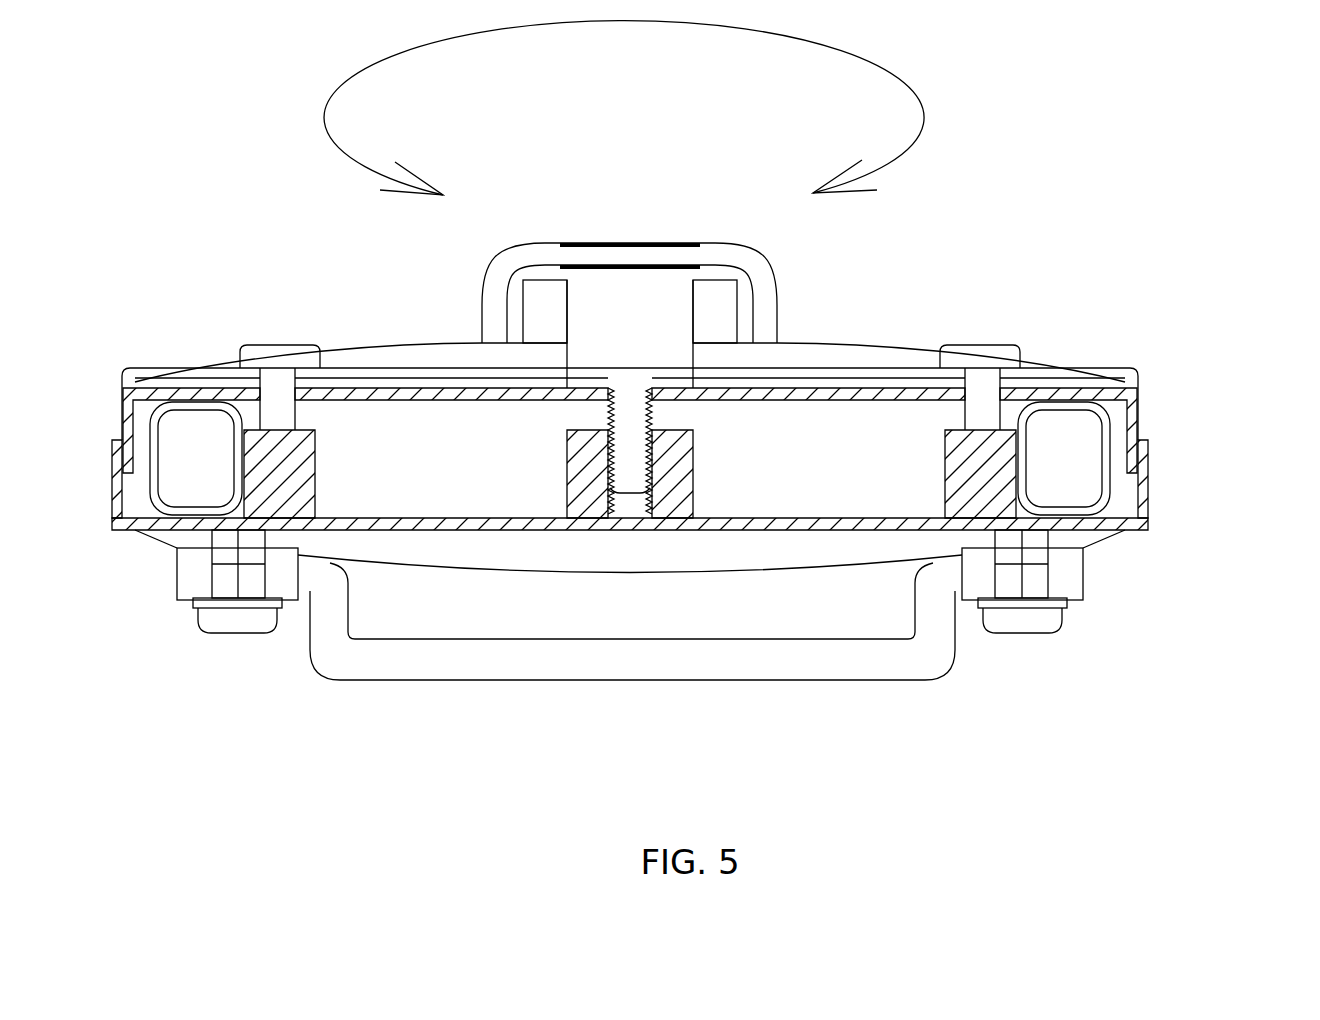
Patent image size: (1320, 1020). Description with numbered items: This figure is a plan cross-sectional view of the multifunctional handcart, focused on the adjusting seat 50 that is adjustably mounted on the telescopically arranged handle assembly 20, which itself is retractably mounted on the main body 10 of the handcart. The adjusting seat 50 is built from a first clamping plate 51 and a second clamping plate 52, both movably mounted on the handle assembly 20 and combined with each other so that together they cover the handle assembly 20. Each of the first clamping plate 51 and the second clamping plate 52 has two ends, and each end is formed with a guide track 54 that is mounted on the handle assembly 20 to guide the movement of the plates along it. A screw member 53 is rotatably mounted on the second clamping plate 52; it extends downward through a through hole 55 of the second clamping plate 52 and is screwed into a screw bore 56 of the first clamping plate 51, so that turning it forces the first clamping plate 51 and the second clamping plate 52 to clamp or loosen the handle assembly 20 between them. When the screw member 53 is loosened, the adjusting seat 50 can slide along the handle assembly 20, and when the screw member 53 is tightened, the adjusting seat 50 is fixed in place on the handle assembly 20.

The main body 10 is at (208, 363).
The handle assembly 20 is at (1108, 465).
The adjusting seat 50 is at (1140, 542).
The first clamping plate 51 is at (1107, 520).
The second clamping plate 52 is at (1137, 400).
The screw member 53 is at (748, 308).
The guide track 54 is at (1117, 433).
The through hole 55 is at (607, 397).
The screw bore 56 is at (645, 470).